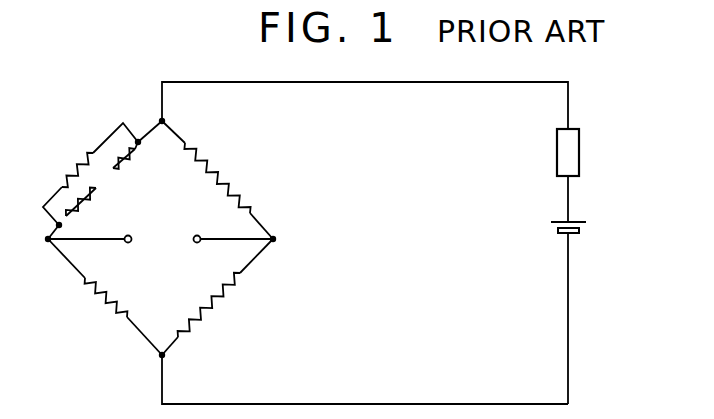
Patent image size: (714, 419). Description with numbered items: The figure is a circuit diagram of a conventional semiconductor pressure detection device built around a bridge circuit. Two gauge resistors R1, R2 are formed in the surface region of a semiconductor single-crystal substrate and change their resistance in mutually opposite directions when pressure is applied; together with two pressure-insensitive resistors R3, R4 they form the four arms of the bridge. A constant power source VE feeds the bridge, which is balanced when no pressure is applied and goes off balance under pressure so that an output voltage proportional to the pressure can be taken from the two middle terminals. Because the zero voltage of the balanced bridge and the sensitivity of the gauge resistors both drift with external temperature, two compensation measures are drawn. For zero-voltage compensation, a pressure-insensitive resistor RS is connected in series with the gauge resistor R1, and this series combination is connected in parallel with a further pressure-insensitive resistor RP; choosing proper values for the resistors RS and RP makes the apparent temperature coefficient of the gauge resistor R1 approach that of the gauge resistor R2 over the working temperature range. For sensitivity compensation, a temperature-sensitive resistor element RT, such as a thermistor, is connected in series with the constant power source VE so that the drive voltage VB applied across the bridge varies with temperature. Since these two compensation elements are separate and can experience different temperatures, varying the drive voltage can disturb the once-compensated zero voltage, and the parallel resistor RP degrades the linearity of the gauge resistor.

The pressure-insensitive resistor RP is at (75, 168).
The gauge resistor R1 is at (132, 164).
The pressure-insensitive resistor RS is at (87, 196).
The gauge resistor R2 is at (125, 299).
The pressure-insensitive resistor R3 is at (230, 186).
The pressure-insensitive resistor R4 is at (232, 291).
The temperature-sensitive resistor element RT is at (580, 152).
The constant power source VE is at (586, 231).
The drive voltage VB is at (328, 82).